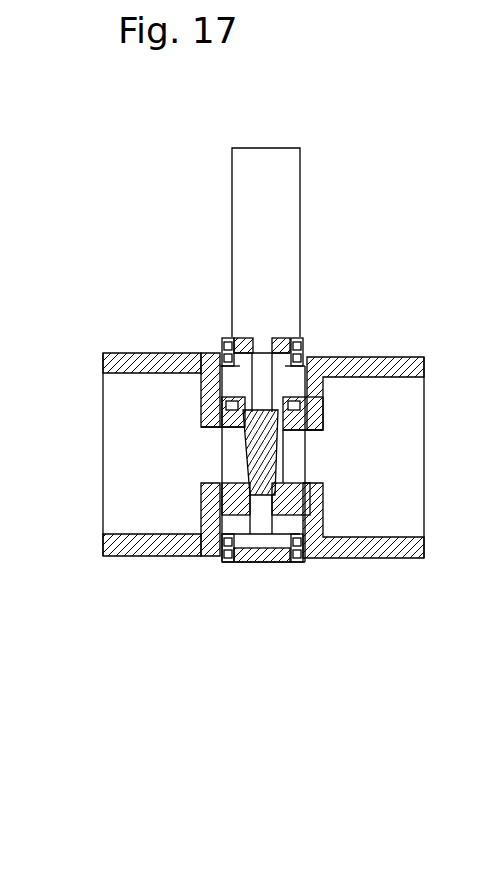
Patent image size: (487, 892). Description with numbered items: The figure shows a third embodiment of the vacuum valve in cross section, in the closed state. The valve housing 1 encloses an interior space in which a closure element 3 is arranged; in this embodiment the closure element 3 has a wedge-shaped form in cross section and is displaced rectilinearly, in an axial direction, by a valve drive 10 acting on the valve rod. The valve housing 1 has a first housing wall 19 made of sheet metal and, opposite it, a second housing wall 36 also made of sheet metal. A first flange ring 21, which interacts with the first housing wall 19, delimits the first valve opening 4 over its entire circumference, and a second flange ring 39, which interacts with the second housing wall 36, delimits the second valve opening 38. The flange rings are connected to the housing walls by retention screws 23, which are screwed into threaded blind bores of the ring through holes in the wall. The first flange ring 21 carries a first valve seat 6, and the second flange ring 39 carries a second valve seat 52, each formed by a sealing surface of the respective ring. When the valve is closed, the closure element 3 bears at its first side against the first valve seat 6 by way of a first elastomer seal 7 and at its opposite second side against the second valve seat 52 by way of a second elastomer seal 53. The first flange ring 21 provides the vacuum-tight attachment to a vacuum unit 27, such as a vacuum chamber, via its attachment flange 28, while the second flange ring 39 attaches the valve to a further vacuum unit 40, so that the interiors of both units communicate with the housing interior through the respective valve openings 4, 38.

The valve housing 1 is at (254, 415).
The closure element 3 is at (258, 455).
The valve opening 4 is at (232, 459).
The valve seat 6 is at (248, 468).
The elastomer seal 7 is at (232, 418).
The valve drive 10 is at (312, 228).
The first housing wall 19 is at (220, 358).
The first flange ring 21 is at (222, 337).
The retention screws 23 is at (315, 395).
The vacuum unit 27 is at (112, 338).
The attachment flange 28 is at (217, 402).
The second housing wall 36 is at (295, 525).
The second valve opening 38 is at (287, 443).
The second flange ring 39 is at (305, 338).
The further vacuum unit 40 is at (393, 338).
The second valve seat 52 is at (275, 427).
The second elastomer seal 53 is at (268, 498).